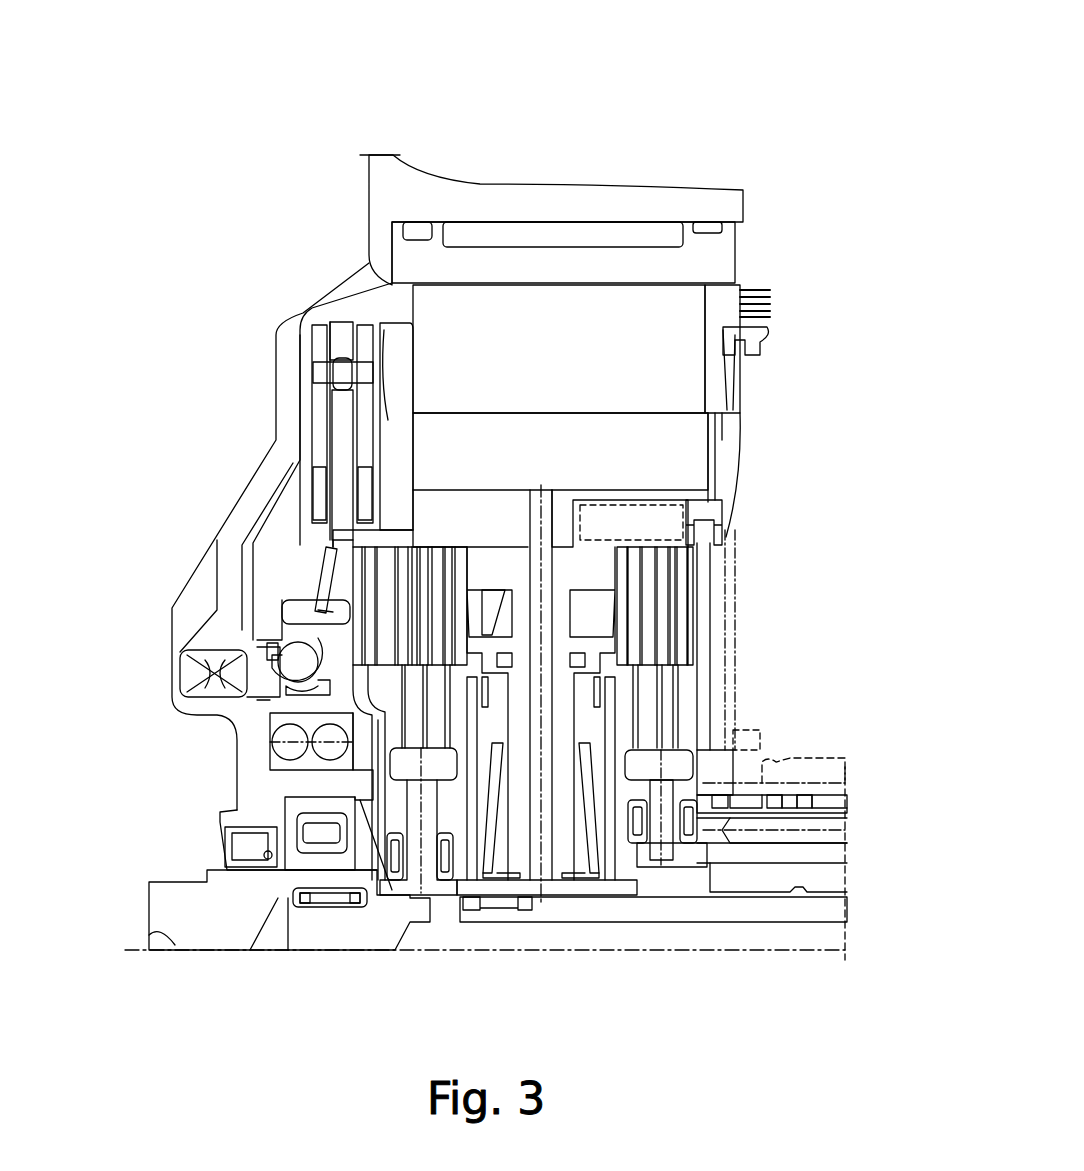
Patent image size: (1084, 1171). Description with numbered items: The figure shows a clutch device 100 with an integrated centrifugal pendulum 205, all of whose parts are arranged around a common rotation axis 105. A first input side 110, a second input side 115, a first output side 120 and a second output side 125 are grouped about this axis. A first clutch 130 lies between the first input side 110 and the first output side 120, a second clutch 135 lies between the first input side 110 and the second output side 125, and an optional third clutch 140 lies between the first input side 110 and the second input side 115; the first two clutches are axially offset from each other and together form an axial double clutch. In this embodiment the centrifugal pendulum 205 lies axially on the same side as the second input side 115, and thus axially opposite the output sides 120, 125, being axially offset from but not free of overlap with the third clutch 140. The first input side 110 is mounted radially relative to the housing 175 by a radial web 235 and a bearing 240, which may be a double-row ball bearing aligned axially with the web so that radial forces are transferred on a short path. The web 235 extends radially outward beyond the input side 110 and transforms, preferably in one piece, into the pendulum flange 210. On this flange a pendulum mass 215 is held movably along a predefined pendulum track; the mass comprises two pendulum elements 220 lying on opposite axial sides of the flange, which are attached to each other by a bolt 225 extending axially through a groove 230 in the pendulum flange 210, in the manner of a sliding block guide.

The clutch device 100 is at (278, 85).
The rotation axis 105 is at (822, 958).
The first input side 110 is at (698, 503).
The second input side 115 is at (183, 916).
The first output side 120 is at (815, 906).
The second output side 125 is at (815, 876).
The first clutch 130 is at (435, 967).
The second clutch 135 is at (675, 967).
The third clutch 140 is at (375, 967).
The housing 175 is at (372, 152).
The centrifugal pendulum 205 is at (330, 262).
The pendulum flange 210 is at (340, 508).
The pendulum mass 215 is at (275, 290).
The pendulum elements 220 is at (365, 415).
The bolt 225 is at (345, 372).
The groove 230 is at (333, 353).
The radial web 235 is at (345, 577).
The bearing 240 is at (218, 735).